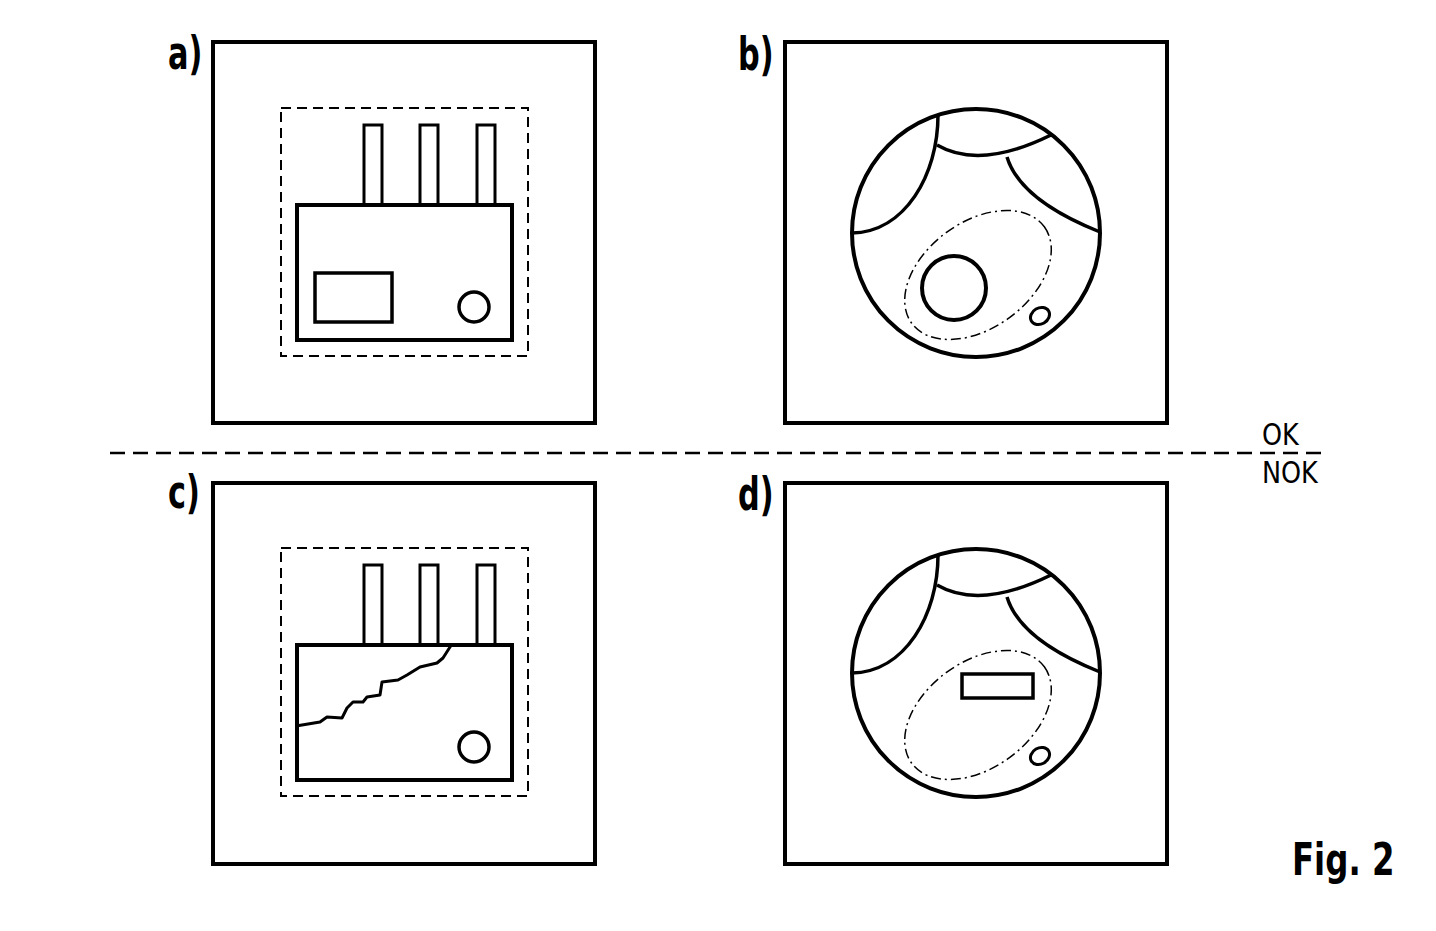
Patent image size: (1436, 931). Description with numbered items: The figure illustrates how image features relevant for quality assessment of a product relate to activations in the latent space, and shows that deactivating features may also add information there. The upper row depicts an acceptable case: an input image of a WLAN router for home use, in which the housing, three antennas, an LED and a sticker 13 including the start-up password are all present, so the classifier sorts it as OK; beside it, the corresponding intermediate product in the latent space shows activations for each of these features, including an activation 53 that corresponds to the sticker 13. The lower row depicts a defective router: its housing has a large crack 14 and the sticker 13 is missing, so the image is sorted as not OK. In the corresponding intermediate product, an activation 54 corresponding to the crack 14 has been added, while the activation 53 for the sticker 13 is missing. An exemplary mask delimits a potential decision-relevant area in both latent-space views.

The sticker 13 is at (315, 292).
The crack 14 is at (345, 712).
The activation 53 is at (933, 315).
The activation 54 is at (1057, 710).